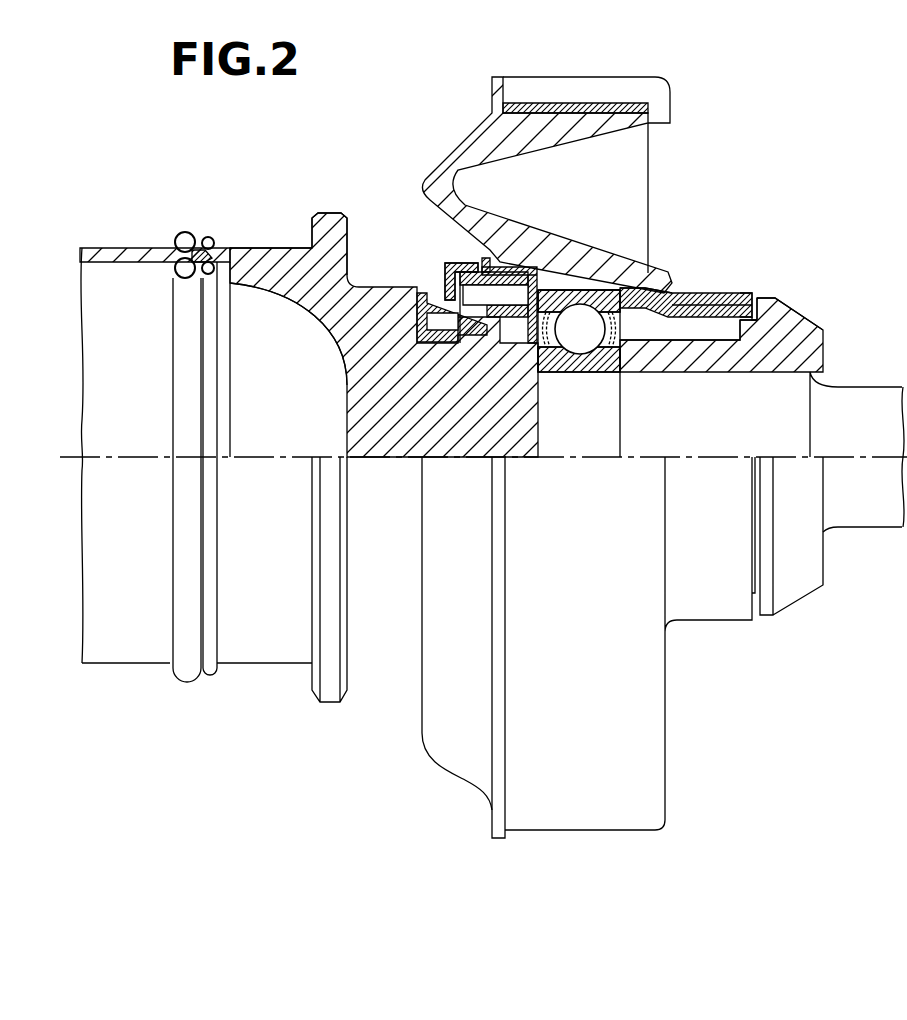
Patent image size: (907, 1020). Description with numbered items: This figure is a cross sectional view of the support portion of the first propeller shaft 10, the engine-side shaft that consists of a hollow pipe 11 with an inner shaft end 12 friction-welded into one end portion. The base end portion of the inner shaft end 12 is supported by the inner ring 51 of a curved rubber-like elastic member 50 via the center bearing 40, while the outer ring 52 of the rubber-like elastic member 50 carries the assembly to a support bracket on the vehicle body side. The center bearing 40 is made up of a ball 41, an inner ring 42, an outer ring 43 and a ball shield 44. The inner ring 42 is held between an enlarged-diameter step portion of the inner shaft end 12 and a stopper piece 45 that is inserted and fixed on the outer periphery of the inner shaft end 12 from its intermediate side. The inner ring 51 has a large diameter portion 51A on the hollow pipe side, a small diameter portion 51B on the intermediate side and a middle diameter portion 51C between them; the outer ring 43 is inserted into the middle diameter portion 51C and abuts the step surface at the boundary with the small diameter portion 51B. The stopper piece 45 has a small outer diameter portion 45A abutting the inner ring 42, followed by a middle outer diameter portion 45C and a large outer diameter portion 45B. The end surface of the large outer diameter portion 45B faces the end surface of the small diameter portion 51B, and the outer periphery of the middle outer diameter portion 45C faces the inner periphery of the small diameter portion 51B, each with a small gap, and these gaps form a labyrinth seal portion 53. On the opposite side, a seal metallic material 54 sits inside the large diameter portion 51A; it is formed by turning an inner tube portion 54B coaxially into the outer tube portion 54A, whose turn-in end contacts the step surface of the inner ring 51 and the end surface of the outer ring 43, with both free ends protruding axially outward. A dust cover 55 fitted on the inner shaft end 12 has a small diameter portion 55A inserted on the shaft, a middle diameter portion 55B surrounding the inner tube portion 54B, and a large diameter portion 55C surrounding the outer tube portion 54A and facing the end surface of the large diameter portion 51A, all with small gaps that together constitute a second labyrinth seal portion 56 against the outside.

The first propeller shaft 10 is at (180, 228).
The hollow pipe 11 is at (108, 248).
The inner shaft end 12 is at (877, 386).
The center bearing 40 is at (580, 303).
The ball 41 is at (592, 372).
The inner ring 42 is at (578, 337).
The outer ring 43 is at (608, 298).
The ball shield 44 is at (645, 373).
The stopper piece 45 is at (813, 315).
The small outer diameter portion 45A is at (693, 340).
The large outer diameter portion 45B is at (775, 300).
The middle outer diameter portion 45C is at (760, 292).
The rubber-like elastic member 50 is at (475, 115).
The inner ring 51 is at (718, 290).
The large diameter portion 51A is at (505, 273).
The small diameter portion 51B is at (740, 293).
The middle diameter portion 51C is at (577, 290).
The outer ring 52 is at (610, 100).
The labyrinth seal portion 53 is at (757, 295).
The seal metallic material 54 is at (532, 375).
The outer tube portion 54A is at (510, 330).
The inner tube portion 54B is at (437, 345).
The dust cover 55 is at (440, 272).
The small diameter portion 55A is at (425, 352).
The middle diameter portion 55B is at (422, 292).
The large diameter portion 55C is at (462, 257).
The labyrinth seal portion 56 is at (468, 250).